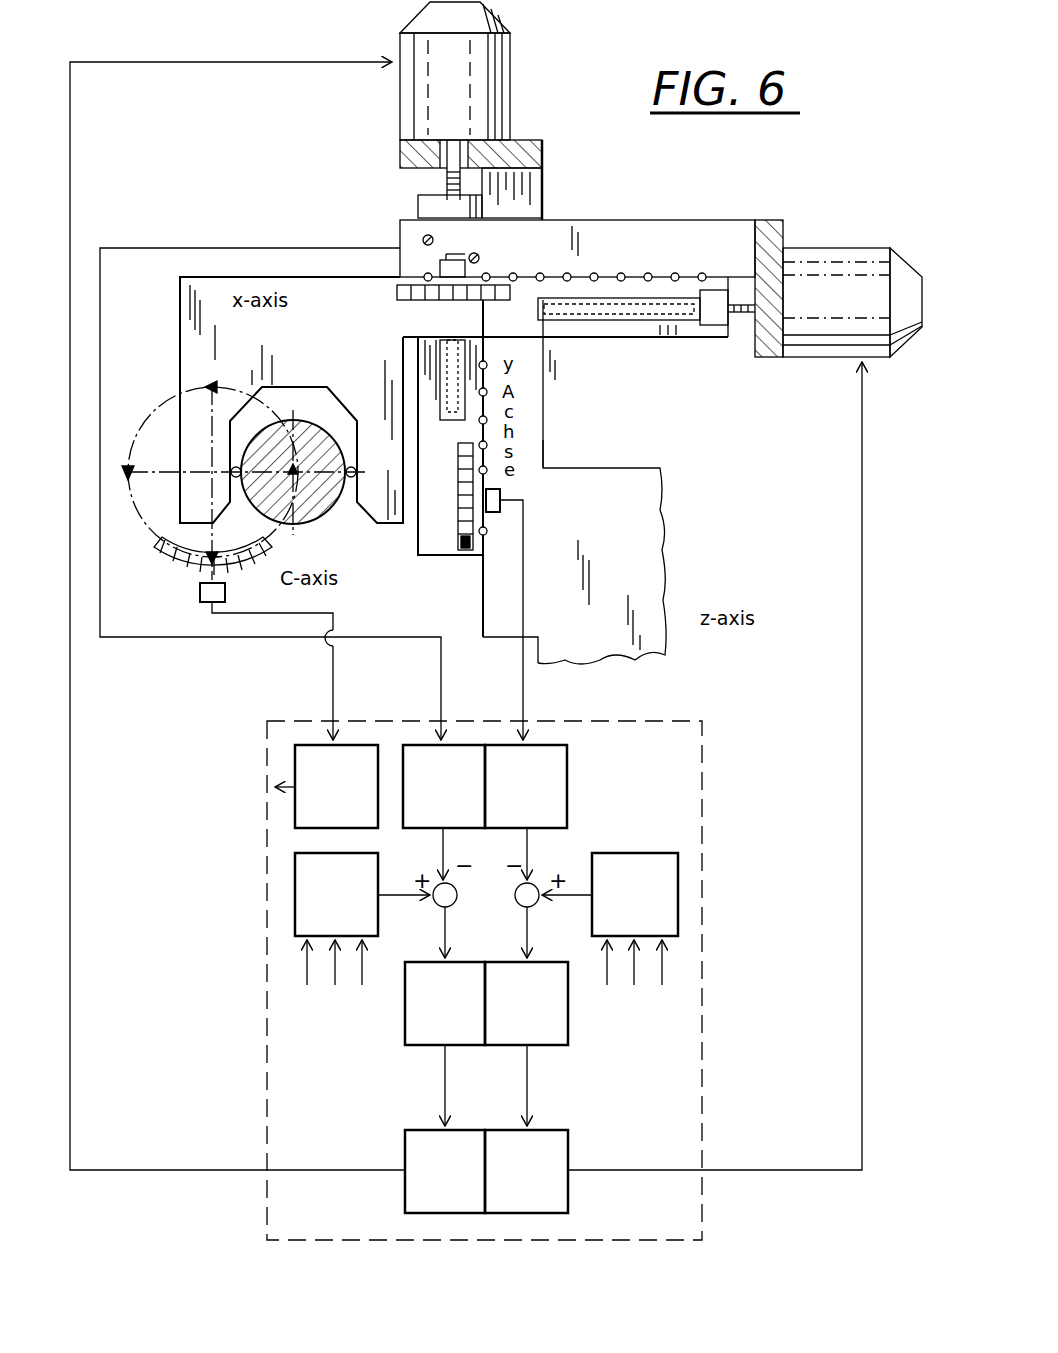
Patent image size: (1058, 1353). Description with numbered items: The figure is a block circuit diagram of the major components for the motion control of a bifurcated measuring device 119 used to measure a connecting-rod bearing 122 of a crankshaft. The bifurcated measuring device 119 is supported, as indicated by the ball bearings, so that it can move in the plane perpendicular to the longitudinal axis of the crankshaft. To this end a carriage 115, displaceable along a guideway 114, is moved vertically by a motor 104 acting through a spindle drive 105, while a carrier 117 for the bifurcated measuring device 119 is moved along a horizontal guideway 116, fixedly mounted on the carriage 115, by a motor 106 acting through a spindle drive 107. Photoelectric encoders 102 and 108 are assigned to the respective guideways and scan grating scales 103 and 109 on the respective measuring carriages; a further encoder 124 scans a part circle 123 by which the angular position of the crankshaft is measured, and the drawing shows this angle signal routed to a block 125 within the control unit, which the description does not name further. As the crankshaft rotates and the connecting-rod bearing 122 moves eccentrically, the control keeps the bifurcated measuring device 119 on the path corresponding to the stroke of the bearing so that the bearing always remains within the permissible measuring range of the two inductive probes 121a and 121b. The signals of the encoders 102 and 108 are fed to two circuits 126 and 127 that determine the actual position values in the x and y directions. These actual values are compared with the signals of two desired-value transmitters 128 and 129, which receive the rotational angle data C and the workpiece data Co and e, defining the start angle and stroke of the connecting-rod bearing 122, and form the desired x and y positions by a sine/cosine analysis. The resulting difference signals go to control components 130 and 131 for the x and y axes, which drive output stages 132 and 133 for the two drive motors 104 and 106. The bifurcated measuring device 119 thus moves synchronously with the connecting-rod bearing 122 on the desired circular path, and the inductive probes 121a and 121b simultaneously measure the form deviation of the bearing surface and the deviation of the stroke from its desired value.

The photoelectric encoder 102 is at (503, 490).
The grating scale 103 is at (465, 555).
The motor 104 is at (487, 82).
The spindle drive 105 is at (447, 187).
The motor 106 is at (840, 262).
The spindle drive 107 is at (645, 322).
The photoelectric encoder 108 is at (473, 248).
The grating scale 109 is at (508, 308).
The guideway 114 is at (652, 538).
The carriage 115 is at (423, 558).
The horizontal guideway 116 is at (668, 238).
The carrier 117 is at (500, 318).
The bifurcated measuring device 119 is at (195, 320).
The inductive probe 121a is at (231, 470).
The inductive probe 121b is at (352, 482).
The connecting-rod bearing 122 is at (285, 425).
The part circle 123 is at (180, 572).
The encoder 124 is at (200, 594).
The C-axis measuring unit MC 125 is at (300, 757).
The circuit 126 is at (460, 760).
The circuit 127 is at (552, 786).
The desired-value transmitter 128 is at (295, 895).
The desired-value transmitter 129 is at (636, 878).
The control component 130 is at (425, 1037).
The control component 131 is at (548, 1030).
The output stage 132 is at (415, 1190).
The output stage 133 is at (555, 1192).